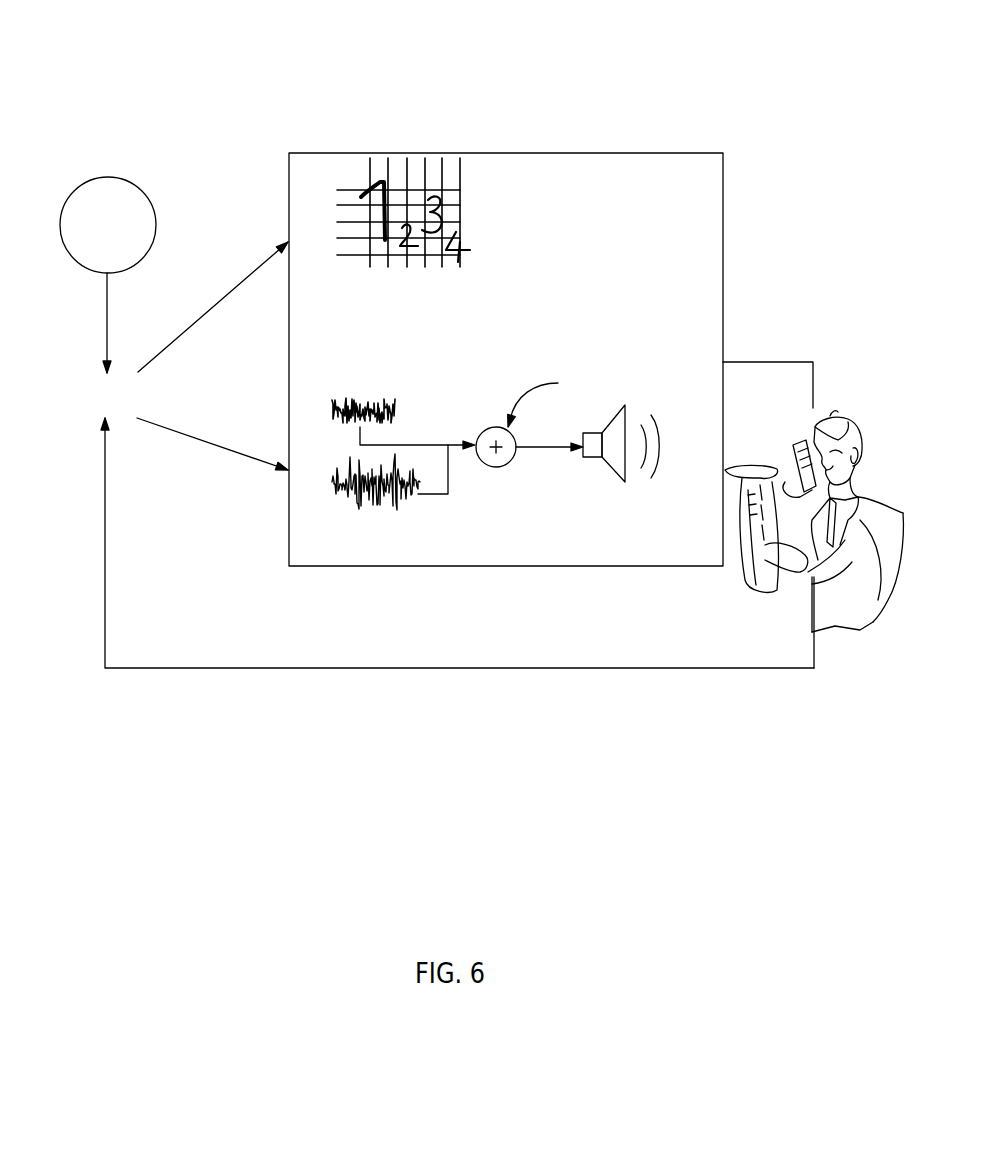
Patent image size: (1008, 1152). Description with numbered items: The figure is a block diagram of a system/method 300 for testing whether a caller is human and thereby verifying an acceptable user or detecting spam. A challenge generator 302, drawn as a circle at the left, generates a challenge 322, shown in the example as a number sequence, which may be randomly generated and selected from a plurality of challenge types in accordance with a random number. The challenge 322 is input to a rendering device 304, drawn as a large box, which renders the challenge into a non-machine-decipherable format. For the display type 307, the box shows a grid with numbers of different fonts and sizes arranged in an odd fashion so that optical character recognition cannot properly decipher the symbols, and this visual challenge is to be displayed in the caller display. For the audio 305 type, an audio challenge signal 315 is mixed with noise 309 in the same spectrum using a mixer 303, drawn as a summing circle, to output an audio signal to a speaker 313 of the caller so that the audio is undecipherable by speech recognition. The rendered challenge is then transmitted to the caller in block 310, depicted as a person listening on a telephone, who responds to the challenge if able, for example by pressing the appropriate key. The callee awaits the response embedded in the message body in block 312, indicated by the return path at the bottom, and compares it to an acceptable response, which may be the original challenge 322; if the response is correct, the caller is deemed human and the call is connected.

The system/method for testing for human callers 300 is at (458, 39).
The challenge generator 302 is at (124, 236).
The mixer 303 is at (508, 462).
The rendering device 304 is at (472, 152).
The audio challenge type 305 is at (552, 403).
The display type challenge 307 is at (462, 190).
The noise 309 is at (400, 410).
The caller 310 is at (834, 414).
The response embedded in message body 312 is at (313, 670).
The speaker 313 is at (627, 407).
The audio challenge signal 315 is at (422, 508).
The challenge 322 is at (125, 412).